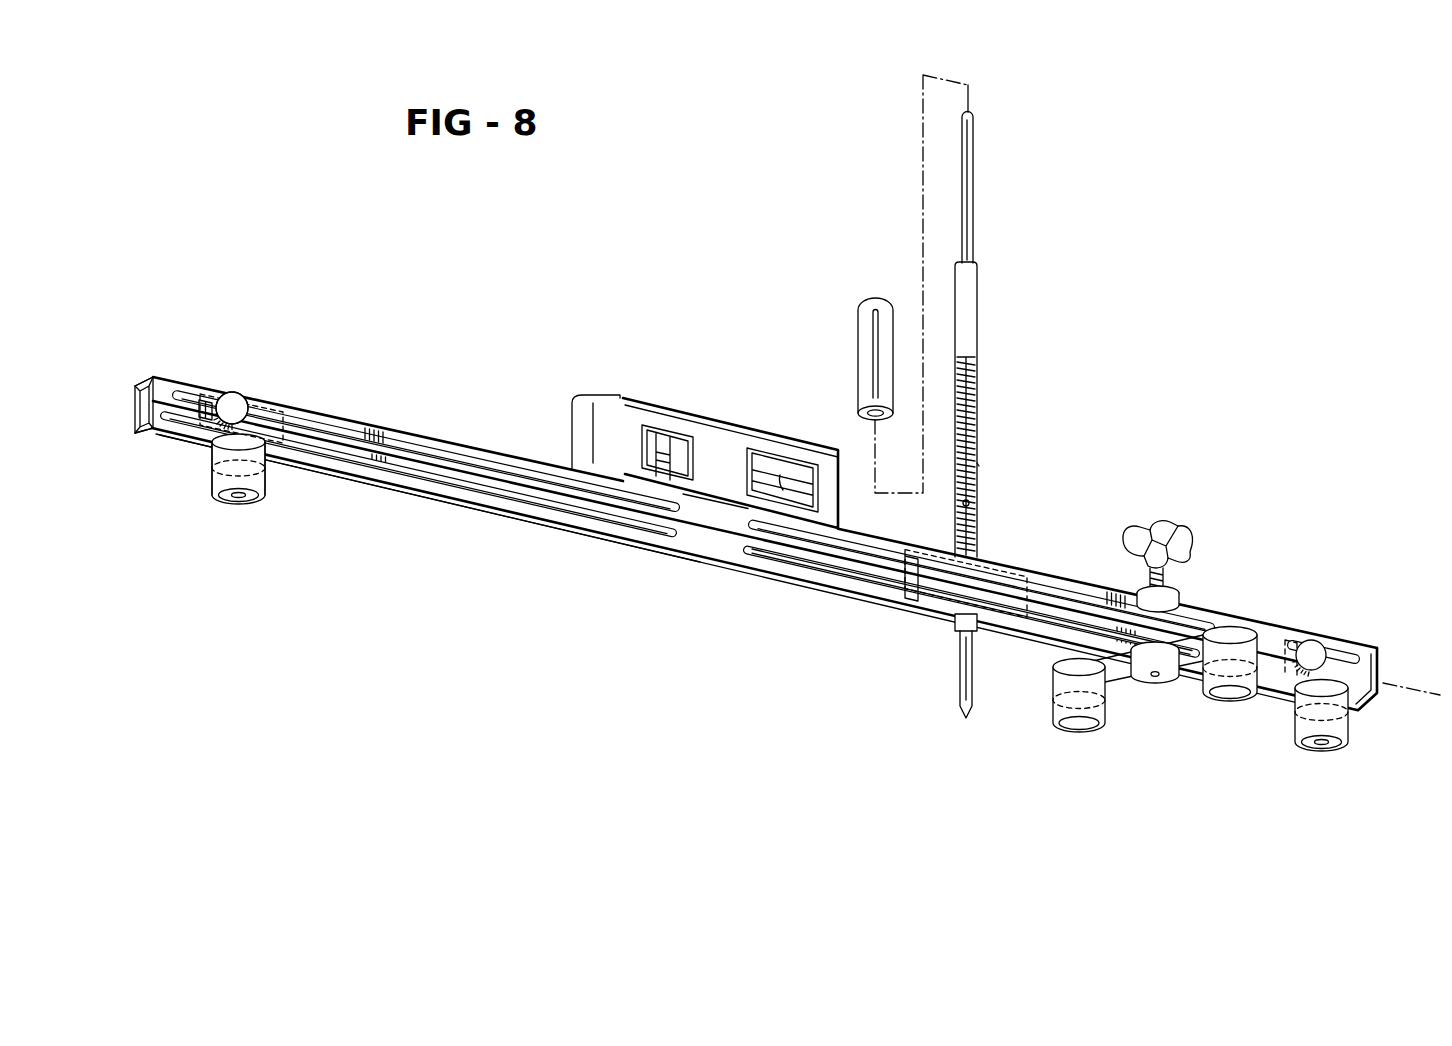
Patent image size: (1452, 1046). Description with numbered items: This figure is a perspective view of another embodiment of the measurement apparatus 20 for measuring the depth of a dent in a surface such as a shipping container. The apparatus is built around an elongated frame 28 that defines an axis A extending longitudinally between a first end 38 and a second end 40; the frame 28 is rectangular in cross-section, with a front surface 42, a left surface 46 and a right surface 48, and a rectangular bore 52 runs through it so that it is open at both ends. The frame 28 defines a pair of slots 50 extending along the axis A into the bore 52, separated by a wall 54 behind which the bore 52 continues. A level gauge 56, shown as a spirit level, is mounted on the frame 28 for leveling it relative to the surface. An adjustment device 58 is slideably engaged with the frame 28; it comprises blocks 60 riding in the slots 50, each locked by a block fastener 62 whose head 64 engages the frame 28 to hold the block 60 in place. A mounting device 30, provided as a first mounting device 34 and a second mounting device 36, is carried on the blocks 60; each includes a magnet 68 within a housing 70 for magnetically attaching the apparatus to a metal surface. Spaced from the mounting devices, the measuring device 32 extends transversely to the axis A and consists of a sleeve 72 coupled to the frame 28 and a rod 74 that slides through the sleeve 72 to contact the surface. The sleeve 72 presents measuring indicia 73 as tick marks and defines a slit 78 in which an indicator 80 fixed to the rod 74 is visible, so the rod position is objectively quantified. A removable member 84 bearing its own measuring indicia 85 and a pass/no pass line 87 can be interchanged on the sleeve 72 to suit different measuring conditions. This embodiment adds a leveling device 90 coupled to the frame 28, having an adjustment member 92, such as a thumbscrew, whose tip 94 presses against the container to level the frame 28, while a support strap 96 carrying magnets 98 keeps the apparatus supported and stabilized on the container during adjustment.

The measurement apparatus 20 is at (1015, 576).
The frame 28 is at (163, 386).
The mounting device 30 is at (229, 500).
The measuring device 32 is at (972, 415).
The first mounting device 34 is at (240, 510).
The second mounting device 36 is at (1328, 747).
The first end 38 is at (1378, 650).
The second end 40 is at (152, 398).
The front surface 42 is at (703, 545).
The left surface 46 is at (134, 436).
The right surface 48 is at (730, 535).
The slot 50 is at (422, 466).
The bore 52 is at (136, 390).
The wall 54 is at (705, 528).
The level gauge 56 is at (607, 420).
The adjustment device 58 is at (264, 391).
The block 60 is at (286, 428).
The block fastener 62 is at (258, 367).
The head 64 is at (232, 392).
The magnet 68 is at (258, 500).
The housing 70 is at (212, 462).
The sleeve 72 is at (970, 340).
The measuring indicia 73 is at (978, 476).
The rod 74 is at (968, 222).
The slit 78 is at (965, 447).
The indicator 80 is at (960, 504).
The removable member 84 is at (830, 345).
The measuring indicia 85 is at (826, 363).
The pass/no pass line 87 is at (860, 348).
The leveling device 90 is at (1154, 626).
The adjustment member 92 is at (1148, 522).
The tip 94 is at (1156, 678).
The support strap 96 is at (1116, 680).
The magnets 98 is at (1082, 722).
The axis A is at (1432, 692).